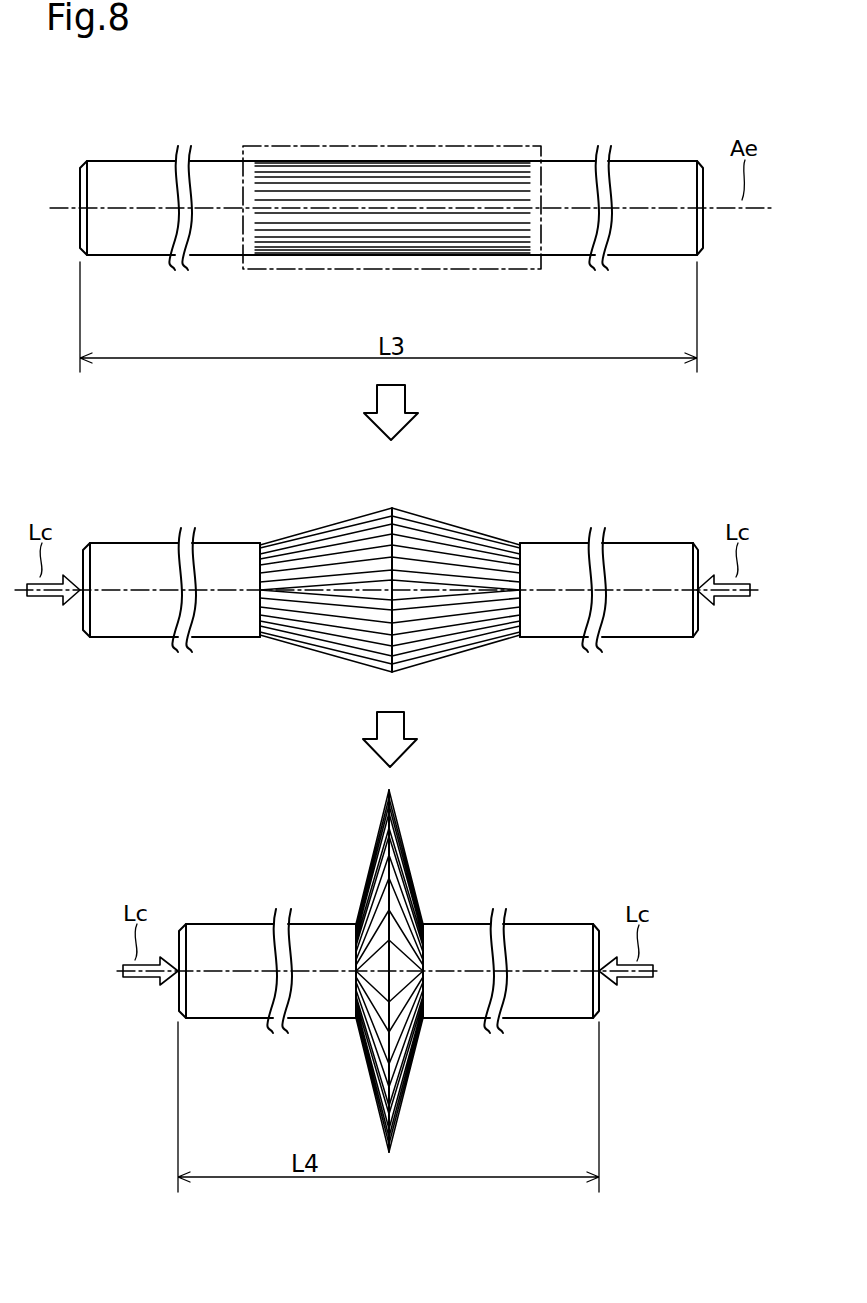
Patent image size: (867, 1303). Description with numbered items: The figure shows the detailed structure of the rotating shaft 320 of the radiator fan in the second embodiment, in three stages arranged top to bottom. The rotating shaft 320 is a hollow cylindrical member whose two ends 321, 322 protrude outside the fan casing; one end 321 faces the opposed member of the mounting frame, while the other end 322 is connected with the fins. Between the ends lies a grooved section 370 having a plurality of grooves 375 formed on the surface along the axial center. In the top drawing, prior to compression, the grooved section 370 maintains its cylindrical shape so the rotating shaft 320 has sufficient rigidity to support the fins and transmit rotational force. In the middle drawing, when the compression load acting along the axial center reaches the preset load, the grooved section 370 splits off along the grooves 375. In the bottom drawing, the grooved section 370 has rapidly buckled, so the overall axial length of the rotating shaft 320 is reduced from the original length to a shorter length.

The rotating shaft 320 is at (624, 97).
The one end of the rotating shaft 321 is at (703, 227).
The other end of the rotating shaft 322 is at (78, 226).
The grooved section 370 is at (500, 272).
The grooves 375 is at (375, 200).